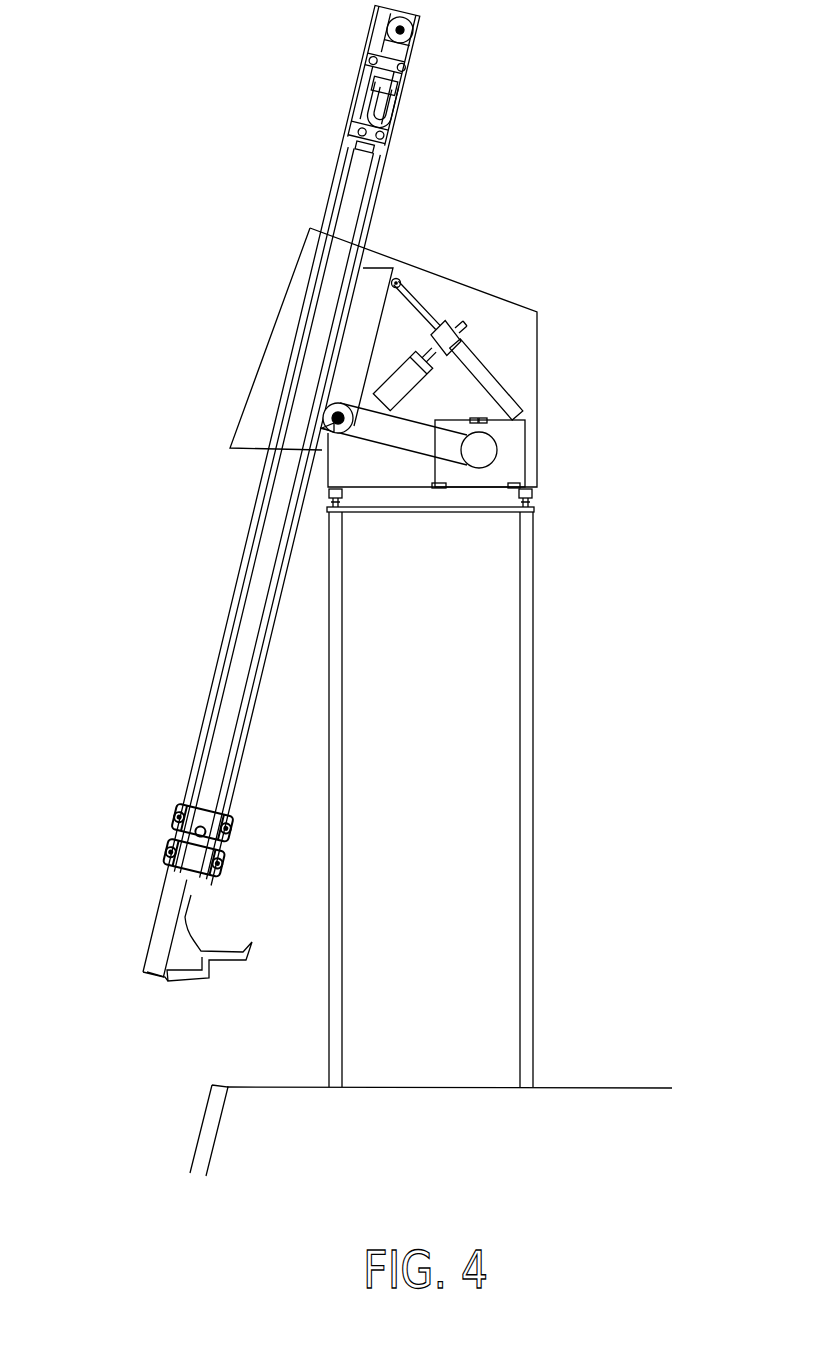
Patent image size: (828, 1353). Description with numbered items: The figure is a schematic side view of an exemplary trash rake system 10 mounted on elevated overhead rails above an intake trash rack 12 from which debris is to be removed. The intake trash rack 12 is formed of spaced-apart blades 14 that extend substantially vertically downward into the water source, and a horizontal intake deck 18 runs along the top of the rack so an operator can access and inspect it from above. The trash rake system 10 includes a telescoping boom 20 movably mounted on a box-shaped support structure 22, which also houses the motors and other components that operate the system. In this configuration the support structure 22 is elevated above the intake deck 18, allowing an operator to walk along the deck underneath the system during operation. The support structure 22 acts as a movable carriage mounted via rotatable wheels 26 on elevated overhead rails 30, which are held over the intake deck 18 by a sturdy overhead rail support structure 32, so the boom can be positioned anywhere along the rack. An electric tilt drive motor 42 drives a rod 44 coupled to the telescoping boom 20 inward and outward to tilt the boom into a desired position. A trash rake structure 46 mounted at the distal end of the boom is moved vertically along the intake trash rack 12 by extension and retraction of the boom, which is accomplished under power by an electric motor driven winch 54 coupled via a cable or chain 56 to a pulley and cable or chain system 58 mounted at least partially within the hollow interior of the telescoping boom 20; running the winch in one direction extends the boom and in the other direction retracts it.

The trash rake system 10 is at (180, 287).
The intake trash rack 12 is at (134, 1084).
The blades 14 is at (205, 1125).
The intake deck 18 is at (630, 1087).
The telescoping boom 20 is at (383, 192).
The support structure 22 is at (538, 368).
The rotatable wheels 26 is at (535, 493).
The elevated overhead rails 30 is at (534, 508).
The overhead rail support structure 32 is at (537, 804).
The tilt drive motor 42 is at (413, 390).
The rod 44 is at (419, 303).
The trash rake structure 46 is at (226, 968).
The electric motor driven winch 54 is at (517, 447).
The cable or chain 56 is at (407, 455).
The pulley and cable or chain system 58 is at (397, 110).